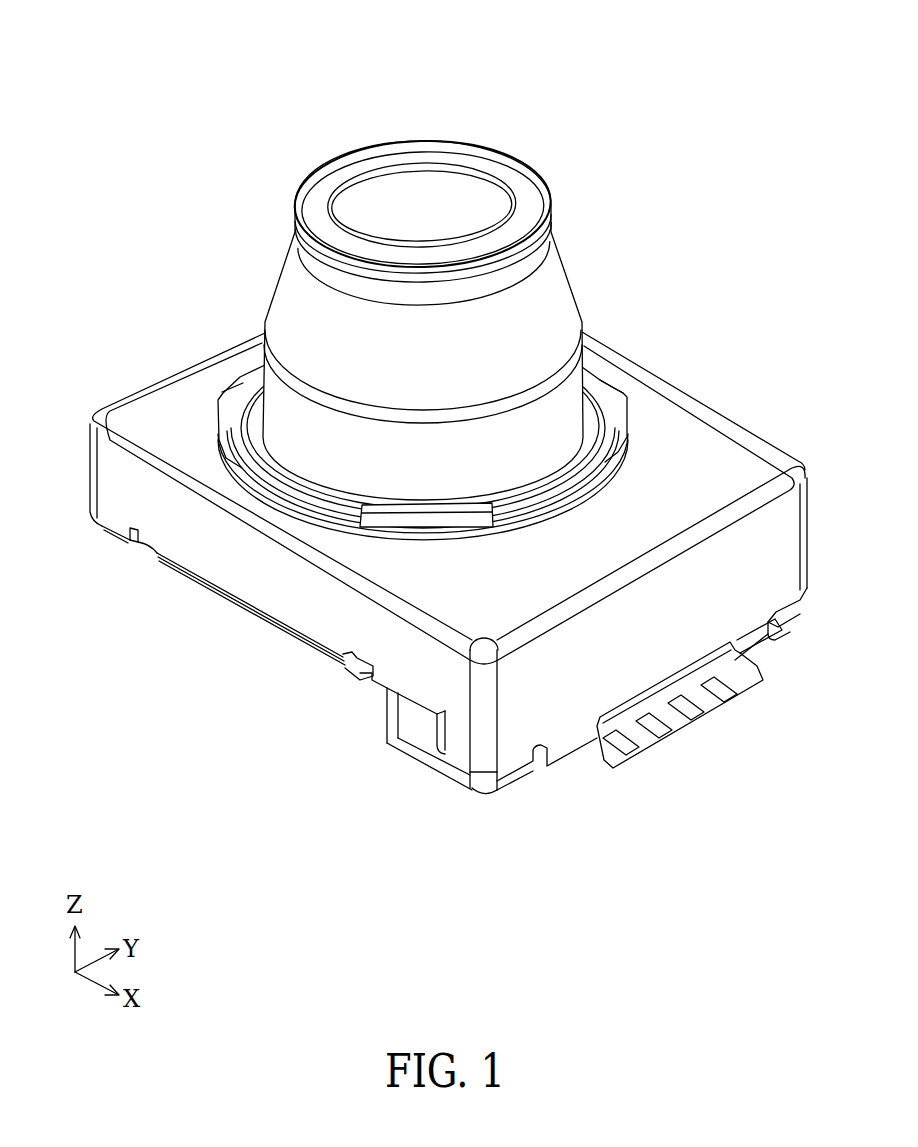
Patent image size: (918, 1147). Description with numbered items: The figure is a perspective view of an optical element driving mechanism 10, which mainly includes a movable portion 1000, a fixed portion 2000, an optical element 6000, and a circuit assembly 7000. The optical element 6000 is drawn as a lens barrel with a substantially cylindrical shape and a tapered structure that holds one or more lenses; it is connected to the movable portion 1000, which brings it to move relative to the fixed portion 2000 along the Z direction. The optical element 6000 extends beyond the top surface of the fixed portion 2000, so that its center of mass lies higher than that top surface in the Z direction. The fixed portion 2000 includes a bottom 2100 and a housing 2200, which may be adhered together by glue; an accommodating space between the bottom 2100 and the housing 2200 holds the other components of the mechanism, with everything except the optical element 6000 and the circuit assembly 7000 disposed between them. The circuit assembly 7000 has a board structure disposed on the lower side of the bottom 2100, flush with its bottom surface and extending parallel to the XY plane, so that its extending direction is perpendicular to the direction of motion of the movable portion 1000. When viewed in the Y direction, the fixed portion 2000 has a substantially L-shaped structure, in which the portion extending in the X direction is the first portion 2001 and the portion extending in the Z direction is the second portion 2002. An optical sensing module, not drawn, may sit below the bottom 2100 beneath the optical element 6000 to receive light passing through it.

The optical element driving mechanism 10 is at (108, 43).
The optical element 6000 is at (397, 197).
The movable portion 1000 is at (550, 297).
The fixed portion 2000 is at (313, 615).
The first portion 2001 is at (167, 528).
The housing 2200 is at (212, 555).
The second portion 2002 is at (417, 713).
The bottom 2100 is at (427, 733).
The circuit assembly 7000 is at (600, 745).